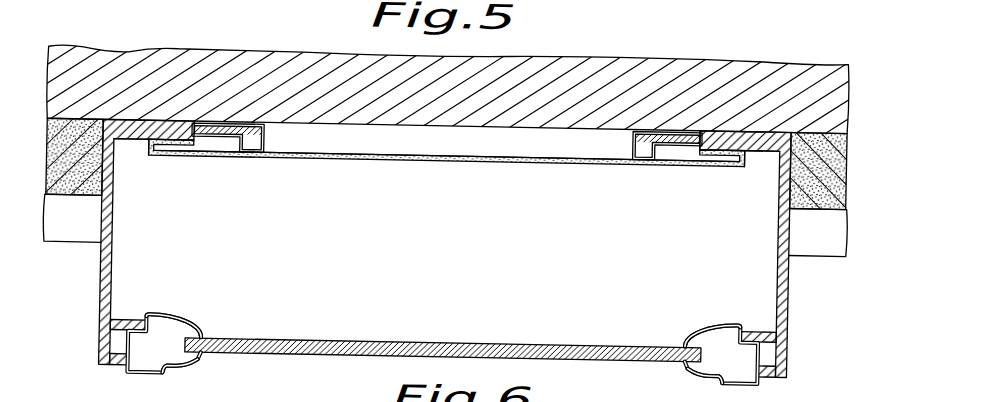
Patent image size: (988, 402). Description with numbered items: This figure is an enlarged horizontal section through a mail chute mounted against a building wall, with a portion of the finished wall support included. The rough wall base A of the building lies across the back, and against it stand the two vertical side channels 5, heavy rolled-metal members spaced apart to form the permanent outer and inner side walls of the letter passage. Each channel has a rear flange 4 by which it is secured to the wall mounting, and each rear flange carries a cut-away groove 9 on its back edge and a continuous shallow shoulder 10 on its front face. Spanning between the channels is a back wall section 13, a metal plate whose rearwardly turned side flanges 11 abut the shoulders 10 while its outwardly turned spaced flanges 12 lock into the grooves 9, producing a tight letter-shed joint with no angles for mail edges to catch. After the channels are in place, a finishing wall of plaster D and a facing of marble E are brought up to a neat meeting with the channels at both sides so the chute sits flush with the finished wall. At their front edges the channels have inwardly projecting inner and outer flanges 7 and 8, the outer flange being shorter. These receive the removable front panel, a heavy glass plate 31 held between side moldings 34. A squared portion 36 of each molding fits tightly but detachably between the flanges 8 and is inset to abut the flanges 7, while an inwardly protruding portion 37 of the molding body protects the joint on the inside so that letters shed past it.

The rough wall base A is at (710, 75).
The finishing wall of plaster D is at (66, 199).
The facing of marble E is at (78, 237).
The rear flanges 4 is at (181, 145).
The vertical side channels 5 is at (100, 284).
The inner flange 7 is at (125, 333).
The outer flange 8 is at (121, 368).
The cut-away portions or grooves 9 is at (701, 128).
The ribs or shoulders 10 is at (135, 144).
The rearwardly turned flanges 11 is at (155, 147).
The outwardly turned spaced flanges 12 is at (261, 143).
The back wall sections 13 is at (461, 161).
The upper removable panel 31 is at (264, 360).
The moldings 34 is at (175, 373).
The squared portion 36 is at (134, 356).
The inwardly protruding portion 37 is at (178, 325).